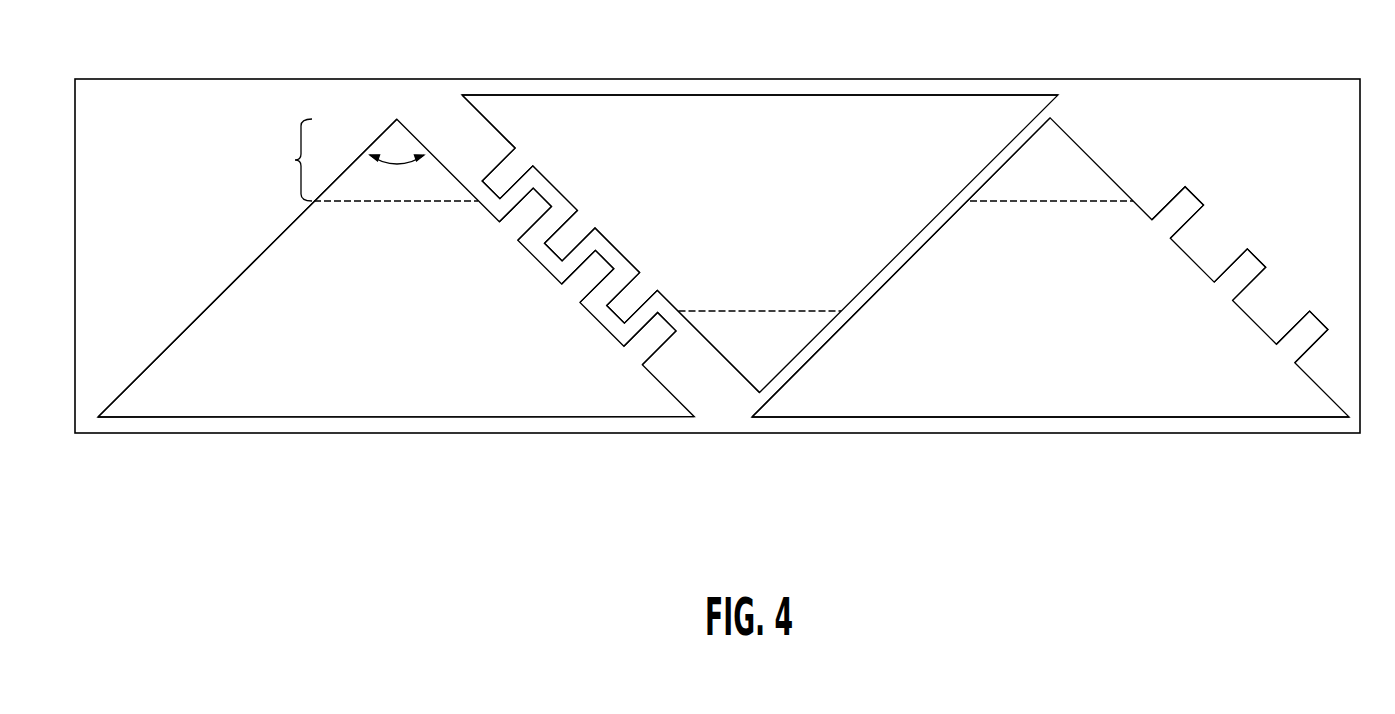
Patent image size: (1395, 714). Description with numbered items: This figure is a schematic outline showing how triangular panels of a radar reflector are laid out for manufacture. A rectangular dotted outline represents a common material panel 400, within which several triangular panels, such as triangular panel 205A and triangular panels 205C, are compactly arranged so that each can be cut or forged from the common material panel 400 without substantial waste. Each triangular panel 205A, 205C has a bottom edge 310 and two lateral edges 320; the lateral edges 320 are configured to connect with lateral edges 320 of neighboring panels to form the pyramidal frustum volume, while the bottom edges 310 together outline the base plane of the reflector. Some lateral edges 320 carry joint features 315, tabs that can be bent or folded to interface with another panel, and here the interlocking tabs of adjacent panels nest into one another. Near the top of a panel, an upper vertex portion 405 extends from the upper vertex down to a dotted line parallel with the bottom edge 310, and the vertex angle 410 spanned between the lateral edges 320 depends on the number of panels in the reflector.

The common material panel 400 is at (745, 78).
The triangular panel 205A is at (315, 391).
The triangular panel 205C is at (560, 113).
The bottom edge 310 is at (728, 96).
The lateral edge 320 is at (252, 268).
The joint feature 315 is at (1179, 196).
The upper vertex portion 405 is at (284, 160).
The vertex angle 410 is at (397, 165).